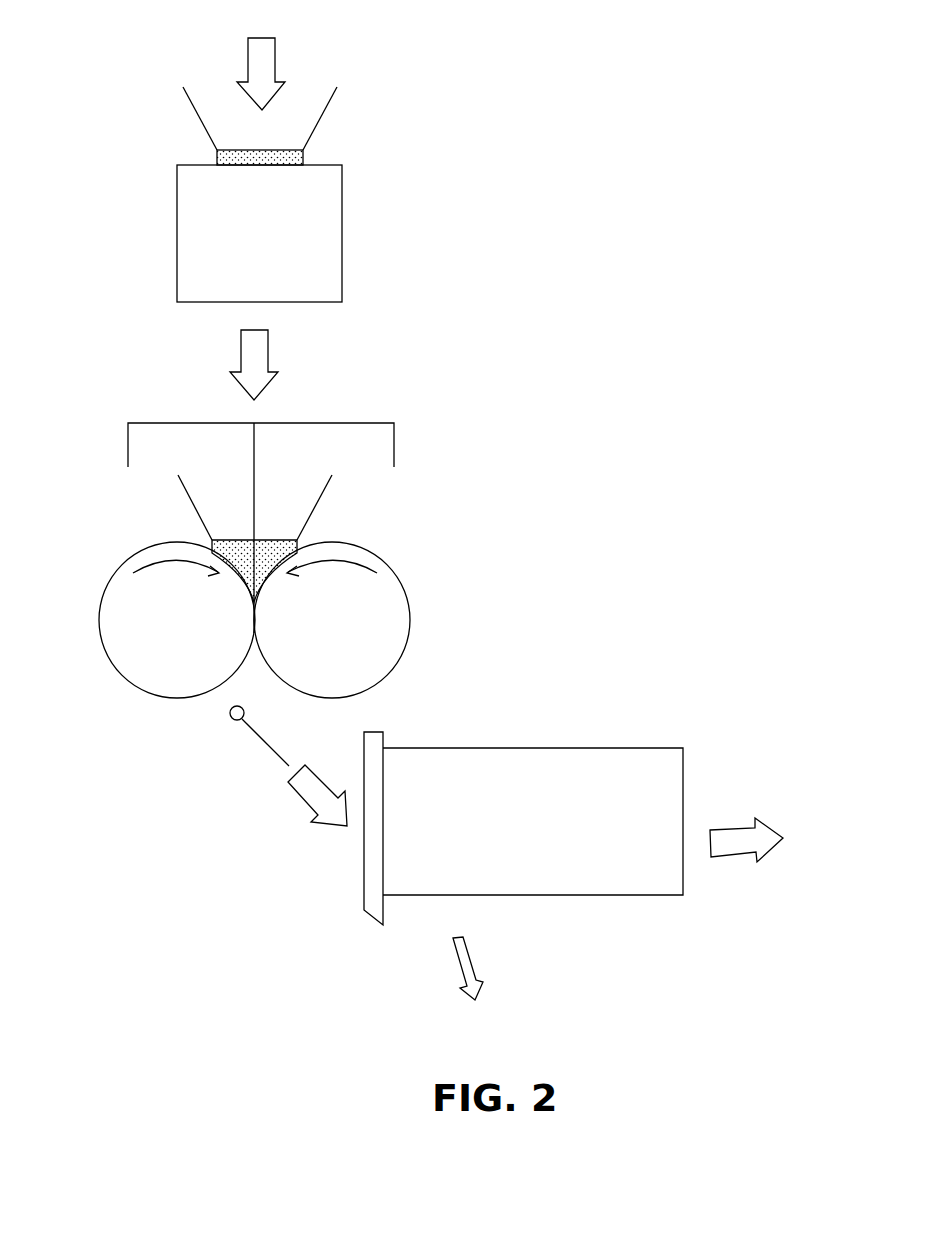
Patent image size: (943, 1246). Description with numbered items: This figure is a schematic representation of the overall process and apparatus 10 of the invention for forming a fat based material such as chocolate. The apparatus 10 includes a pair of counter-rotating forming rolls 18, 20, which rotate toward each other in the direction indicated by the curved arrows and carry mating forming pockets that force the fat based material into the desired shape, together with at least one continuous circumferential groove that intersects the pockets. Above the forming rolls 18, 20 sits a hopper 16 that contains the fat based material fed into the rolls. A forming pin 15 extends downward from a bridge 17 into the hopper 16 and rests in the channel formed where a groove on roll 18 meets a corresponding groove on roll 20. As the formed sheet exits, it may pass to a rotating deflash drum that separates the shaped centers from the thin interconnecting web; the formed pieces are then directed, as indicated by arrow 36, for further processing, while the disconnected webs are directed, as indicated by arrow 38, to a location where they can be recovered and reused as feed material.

The apparatus 10 is at (578, 498).
The forming pin 15 is at (257, 488).
The hopper 16 is at (218, 506).
The bridge 17 is at (358, 423).
The forming roll 18 is at (143, 637).
The forming roll 20 is at (388, 623).
The arrow 36 is at (752, 861).
The arrow 38 is at (475, 991).